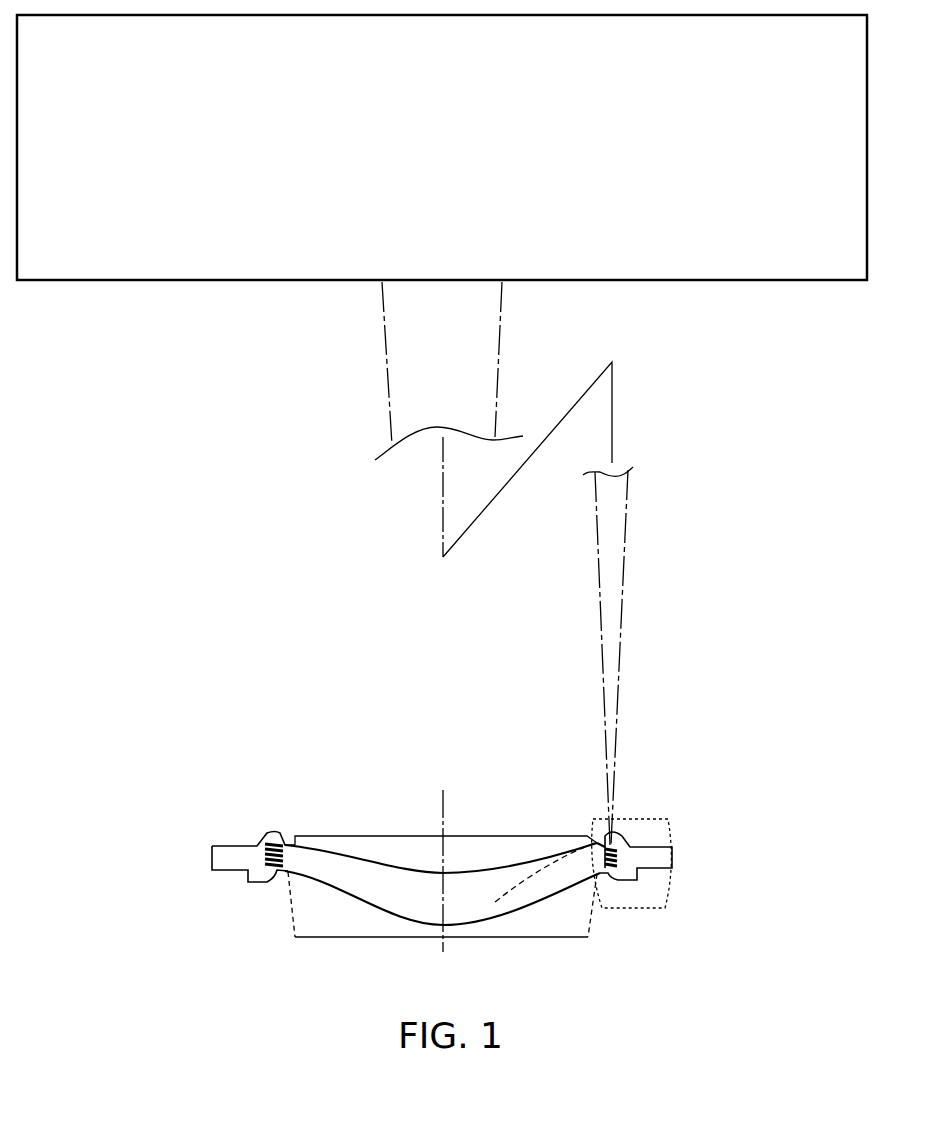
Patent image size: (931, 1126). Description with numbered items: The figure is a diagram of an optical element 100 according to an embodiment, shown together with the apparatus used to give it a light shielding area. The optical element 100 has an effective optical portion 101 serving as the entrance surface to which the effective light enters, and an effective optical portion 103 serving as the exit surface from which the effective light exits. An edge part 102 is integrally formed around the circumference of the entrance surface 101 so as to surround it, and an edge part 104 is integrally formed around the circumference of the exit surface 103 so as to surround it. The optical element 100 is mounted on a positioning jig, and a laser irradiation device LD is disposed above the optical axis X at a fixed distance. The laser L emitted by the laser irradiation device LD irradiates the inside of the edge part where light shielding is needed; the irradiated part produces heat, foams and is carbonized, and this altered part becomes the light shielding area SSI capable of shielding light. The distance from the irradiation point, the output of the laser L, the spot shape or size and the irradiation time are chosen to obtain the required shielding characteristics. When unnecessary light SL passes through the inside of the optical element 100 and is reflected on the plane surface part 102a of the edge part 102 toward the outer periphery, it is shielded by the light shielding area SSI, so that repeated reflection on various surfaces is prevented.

The laser irradiation device LD is at (442, 147).
The laser L is at (623, 595).
The optical element 100 is at (352, 812).
The optical axis X is at (440, 797).
The effective optical portion 101 is at (441, 842).
The effective optical portion 103 is at (442, 916).
The unnecessary light SL is at (503, 895).
The edge part 104 is at (622, 910).
The light shielding area SSI is at (620, 850).
The edge part 102 is at (610, 847).
The plane surface part 102a is at (597, 842).